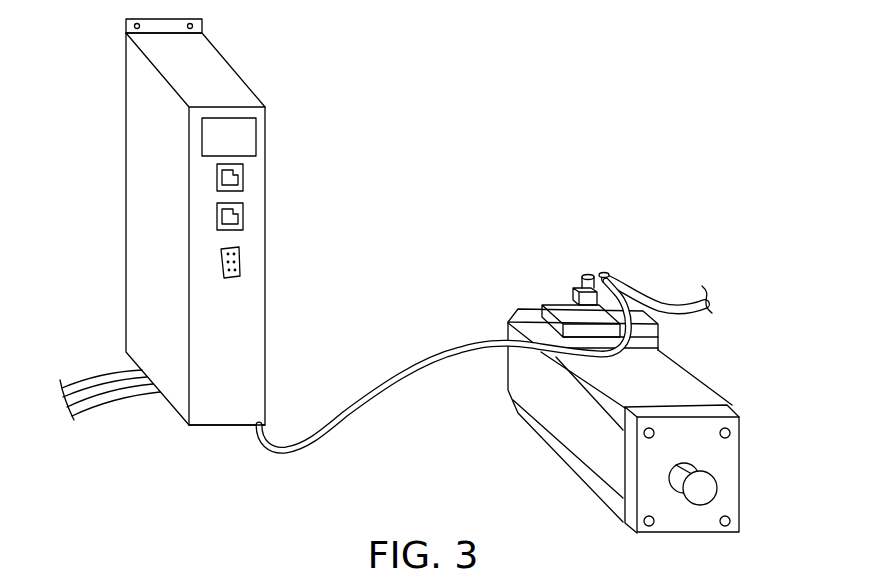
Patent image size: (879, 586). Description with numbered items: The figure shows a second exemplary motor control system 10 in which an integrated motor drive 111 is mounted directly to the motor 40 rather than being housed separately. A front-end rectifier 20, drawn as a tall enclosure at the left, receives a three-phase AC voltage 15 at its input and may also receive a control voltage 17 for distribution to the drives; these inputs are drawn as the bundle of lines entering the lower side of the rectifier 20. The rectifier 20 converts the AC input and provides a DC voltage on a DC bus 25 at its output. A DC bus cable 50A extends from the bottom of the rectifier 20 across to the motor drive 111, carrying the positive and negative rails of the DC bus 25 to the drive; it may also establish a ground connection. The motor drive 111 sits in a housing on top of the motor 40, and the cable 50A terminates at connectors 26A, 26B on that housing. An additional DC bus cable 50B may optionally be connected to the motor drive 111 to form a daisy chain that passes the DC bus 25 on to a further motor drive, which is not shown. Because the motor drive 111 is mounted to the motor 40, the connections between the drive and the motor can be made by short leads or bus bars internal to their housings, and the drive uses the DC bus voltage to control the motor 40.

The motor control system 10 is at (260, 60).
The front-end rectifier 20 is at (142, 236).
The three-phase AC voltage 15 is at (110, 394).
The control voltage 17 is at (120, 404).
The DC bus 25 is at (443, 374).
The DC bus cable 50A is at (400, 393).
The additional DC bus cable 50B is at (677, 302).
The connector 26A is at (582, 282).
The connector 26B is at (603, 274).
The motor 40 is at (690, 377).
The motor drive 111 is at (670, 337).